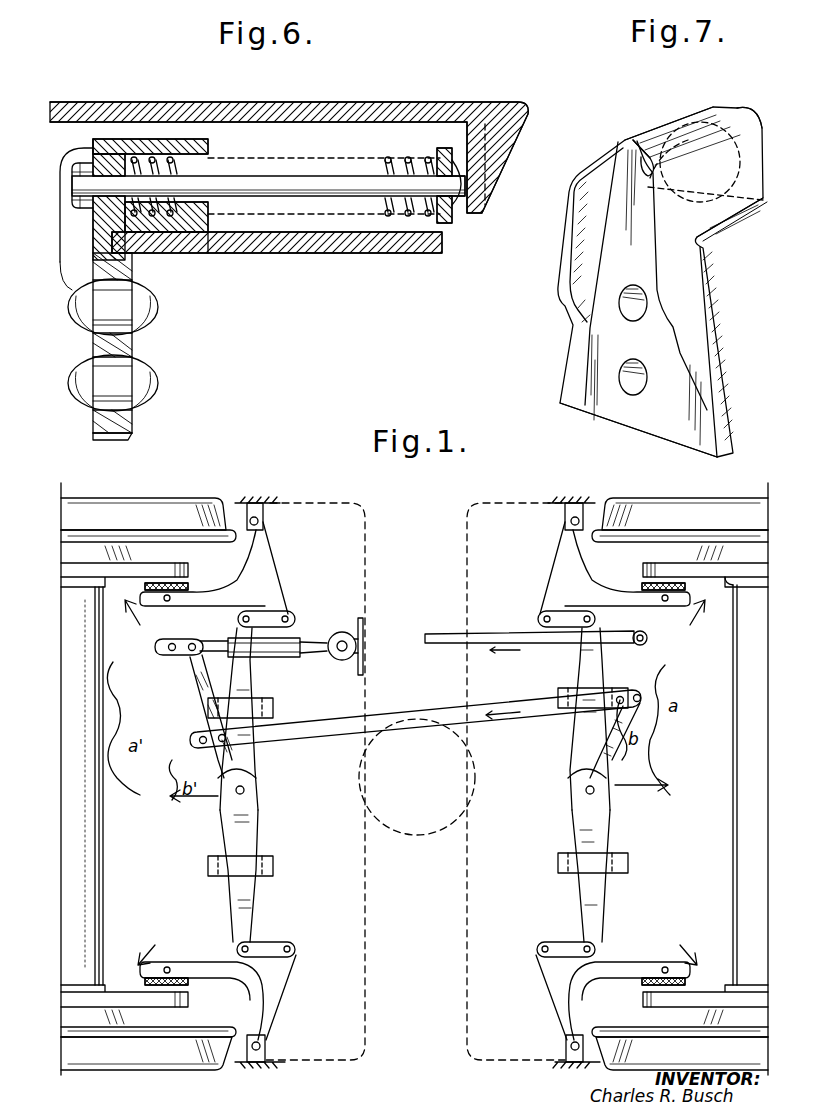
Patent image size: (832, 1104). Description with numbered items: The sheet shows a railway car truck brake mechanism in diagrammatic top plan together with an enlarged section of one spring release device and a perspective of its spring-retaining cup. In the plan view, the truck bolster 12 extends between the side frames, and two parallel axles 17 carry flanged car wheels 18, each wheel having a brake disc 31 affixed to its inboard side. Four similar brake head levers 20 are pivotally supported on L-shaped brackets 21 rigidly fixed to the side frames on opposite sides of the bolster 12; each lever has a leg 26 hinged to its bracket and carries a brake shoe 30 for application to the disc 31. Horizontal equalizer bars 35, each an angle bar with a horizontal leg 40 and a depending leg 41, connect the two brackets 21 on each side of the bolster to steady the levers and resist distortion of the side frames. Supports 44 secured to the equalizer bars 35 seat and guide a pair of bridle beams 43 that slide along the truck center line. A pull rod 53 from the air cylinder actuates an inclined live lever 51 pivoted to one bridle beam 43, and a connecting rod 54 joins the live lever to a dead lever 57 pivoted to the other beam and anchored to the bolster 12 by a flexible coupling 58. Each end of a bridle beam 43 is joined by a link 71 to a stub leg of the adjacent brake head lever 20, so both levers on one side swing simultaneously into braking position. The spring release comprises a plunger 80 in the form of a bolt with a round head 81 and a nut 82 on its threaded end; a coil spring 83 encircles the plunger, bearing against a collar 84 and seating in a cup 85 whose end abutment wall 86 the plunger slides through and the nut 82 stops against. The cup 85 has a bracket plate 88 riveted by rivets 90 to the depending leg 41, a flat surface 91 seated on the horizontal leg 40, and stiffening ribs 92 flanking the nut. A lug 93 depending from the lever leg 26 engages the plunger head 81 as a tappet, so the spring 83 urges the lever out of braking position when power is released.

In FIG. 1, the truck bolster 12 is at (363, 903).
In FIG. 1, the axles 17 is at (90, 830).
In FIG. 1, the car wheels 18 is at (112, 506).
In FIG. 6, the brake head levers 20 is at (474, 95).
In FIG. 1, the brake head levers 20 is at (272, 583).
In FIG. 1, the brackets 21 is at (268, 522).
In FIG. 6, the leg 26 is at (382, 103).
In FIG. 1, the brake shoe 30 is at (190, 588).
In FIG. 1, the brake disc 31 is at (148, 565).
In FIG. 6, the equalizer bars 35 is at (335, 254).
In FIG. 6, the horizontal leg 40 is at (250, 253).
In FIG. 6, the depending leg 41 is at (132, 426).
In FIG. 1, the bridle beams 43 is at (232, 820).
In FIG. 1, the supports 44 is at (275, 708).
In FIG. 1, the live lever 51 is at (628, 670).
In FIG. 1, the pull rod 53 is at (440, 632).
In FIG. 1, the connecting rod 54 is at (345, 738).
In FIG. 1, the dead lever 57 is at (215, 686).
In FIG. 1, the flexible coupling 58 is at (300, 640).
In FIG. 1, the link 71 is at (270, 618).
In FIG. 6, the plunger 80 is at (313, 197).
In FIG. 6, the plunger head 81 is at (458, 200).
In FIG. 6, the nut 82 is at (72, 204).
In FIG. 6, the coil spring 83 is at (393, 216).
In FIG. 6, the washer or collar 84 is at (452, 196).
In FIG. 6, the cup 85 is at (210, 146).
In FIG. 7, the cup 85 is at (743, 120).
In FIG. 6, the end abutment wall 86 is at (108, 138).
In FIG. 7, the end abutment wall 86 is at (628, 143).
In FIG. 6, the bracket plate 88 is at (93, 424).
In FIG. 7, the bracket plate 88 is at (595, 363).
In FIG. 6, the rivets 90 is at (152, 370).
In FIG. 6, the flat surface 91 is at (182, 253).
In FIG. 7, the flat surface 91 is at (740, 215).
In FIG. 6, the ribs 92 is at (60, 250).
In FIG. 7, the ribs 92 is at (573, 217).
In FIG. 6, the lug 93 is at (500, 168).